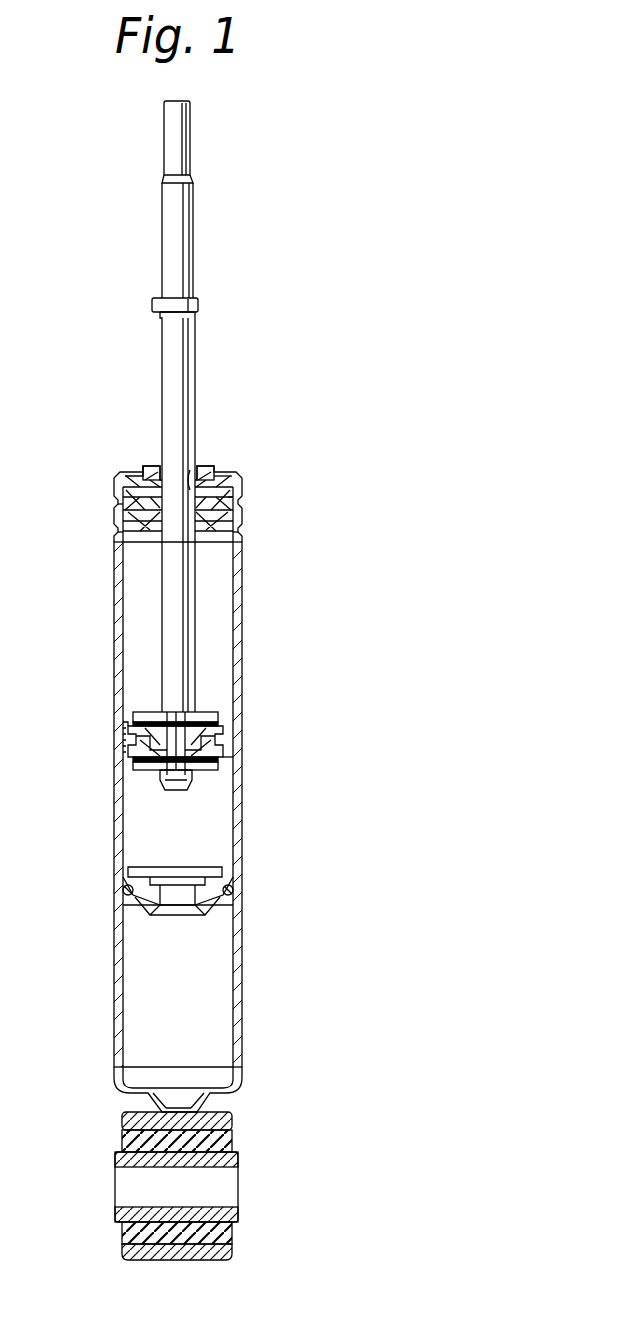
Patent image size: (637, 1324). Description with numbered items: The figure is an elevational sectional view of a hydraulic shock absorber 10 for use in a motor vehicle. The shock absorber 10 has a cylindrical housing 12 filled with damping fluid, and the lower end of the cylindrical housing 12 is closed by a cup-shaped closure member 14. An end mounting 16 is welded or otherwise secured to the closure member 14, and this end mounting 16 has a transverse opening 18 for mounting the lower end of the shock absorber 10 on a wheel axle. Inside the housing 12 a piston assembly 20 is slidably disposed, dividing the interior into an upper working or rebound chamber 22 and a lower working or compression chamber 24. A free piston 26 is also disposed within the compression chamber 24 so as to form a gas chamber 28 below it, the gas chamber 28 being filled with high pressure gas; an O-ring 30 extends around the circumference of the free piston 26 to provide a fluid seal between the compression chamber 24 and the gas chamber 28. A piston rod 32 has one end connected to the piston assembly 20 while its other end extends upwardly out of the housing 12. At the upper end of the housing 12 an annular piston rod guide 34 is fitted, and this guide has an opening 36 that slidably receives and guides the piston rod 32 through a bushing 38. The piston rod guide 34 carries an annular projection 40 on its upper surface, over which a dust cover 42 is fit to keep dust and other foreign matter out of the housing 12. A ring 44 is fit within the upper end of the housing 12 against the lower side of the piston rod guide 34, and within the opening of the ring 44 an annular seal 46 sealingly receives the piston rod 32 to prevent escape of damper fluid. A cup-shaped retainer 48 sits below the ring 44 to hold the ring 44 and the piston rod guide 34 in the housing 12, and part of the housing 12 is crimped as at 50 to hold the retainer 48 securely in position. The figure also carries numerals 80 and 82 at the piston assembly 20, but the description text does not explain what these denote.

The hydraulic shock absorber 10 is at (303, 603).
The cylindrical housing 12 is at (115, 640).
The cup-shaped closure member 14 is at (237, 1080).
The end mounting 16 is at (228, 1160).
The transverse opening 18 is at (232, 1195).
The piston assembly 20 is at (234, 718).
The upper working or rebound chamber 22 is at (126, 602).
The lower working or compression chamber 24 is at (159, 840).
The free piston 26 is at (233, 878).
The gas chamber 28 is at (154, 993).
The O-ring 30 is at (228, 893).
The piston rod 32 is at (180, 376).
The annular piston rod guide 34 is at (135, 490).
The opening 36 is at (188, 468).
The bushing 38 is at (145, 478).
The annular projection 40 is at (150, 470).
The dust cover 42 is at (222, 468).
The ring 44 is at (240, 500).
The annular seal 46 is at (237, 530).
The cup-shaped retainer 48 is at (118, 522).
The crimped portion 50 is at (113, 533).
The piston band 80 is at (230, 762).
The piston seal 82 is at (120, 727).